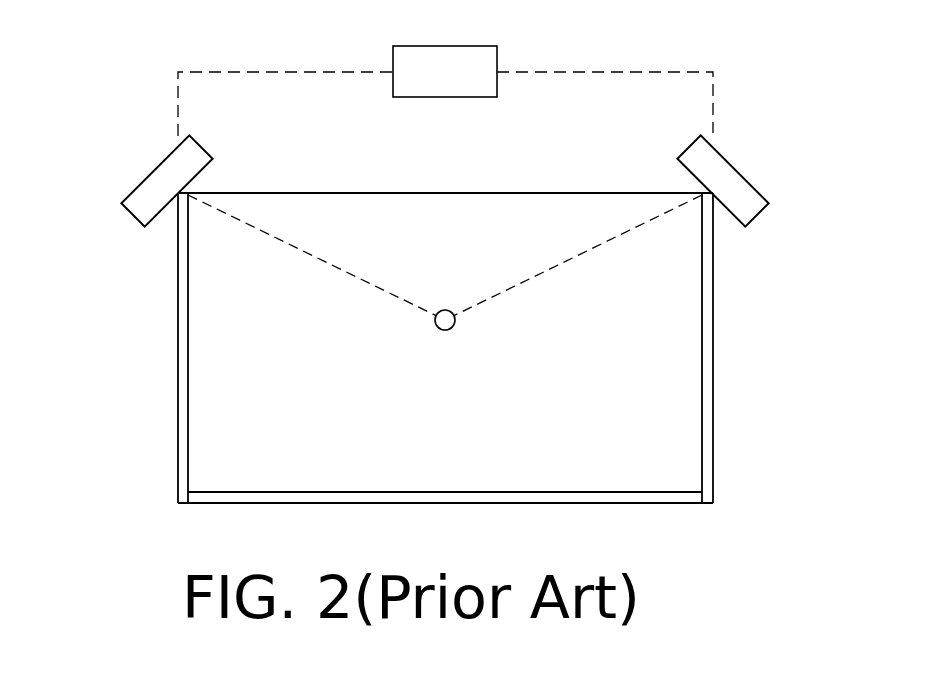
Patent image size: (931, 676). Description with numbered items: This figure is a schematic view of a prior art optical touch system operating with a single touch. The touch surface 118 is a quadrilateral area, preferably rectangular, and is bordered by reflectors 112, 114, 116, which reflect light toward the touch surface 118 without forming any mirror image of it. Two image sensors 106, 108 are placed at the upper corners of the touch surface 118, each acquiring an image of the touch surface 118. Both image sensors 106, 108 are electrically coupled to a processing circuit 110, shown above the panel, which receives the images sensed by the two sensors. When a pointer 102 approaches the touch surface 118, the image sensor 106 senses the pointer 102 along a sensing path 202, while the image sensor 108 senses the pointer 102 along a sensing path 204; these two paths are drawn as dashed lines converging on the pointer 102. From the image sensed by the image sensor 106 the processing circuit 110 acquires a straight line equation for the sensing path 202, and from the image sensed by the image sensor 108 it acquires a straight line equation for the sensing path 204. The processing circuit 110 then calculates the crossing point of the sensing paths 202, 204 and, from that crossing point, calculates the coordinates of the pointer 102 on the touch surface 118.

The pointer 102 is at (445, 330).
The image sensor 106 is at (133, 210).
The image sensor 108 is at (758, 216).
The processing circuit 110 is at (443, 46).
The reflector 112 is at (183, 342).
The reflector 114 is at (437, 497).
The reflector 116 is at (708, 378).
The touch surface 118 is at (200, 437).
The sensing path 202 is at (307, 253).
The sensing path 204 is at (578, 255).